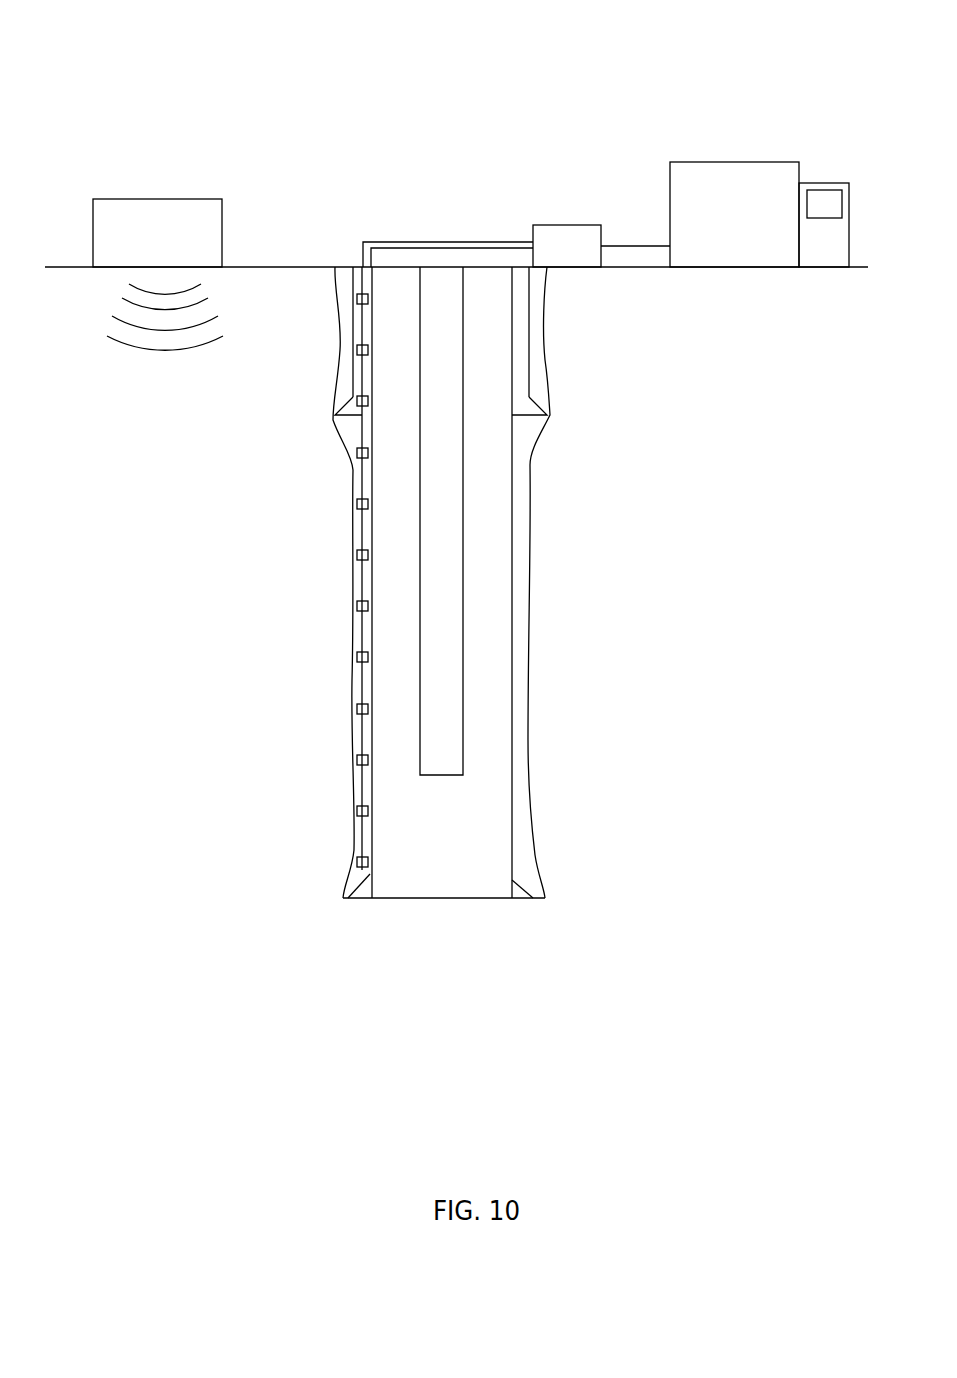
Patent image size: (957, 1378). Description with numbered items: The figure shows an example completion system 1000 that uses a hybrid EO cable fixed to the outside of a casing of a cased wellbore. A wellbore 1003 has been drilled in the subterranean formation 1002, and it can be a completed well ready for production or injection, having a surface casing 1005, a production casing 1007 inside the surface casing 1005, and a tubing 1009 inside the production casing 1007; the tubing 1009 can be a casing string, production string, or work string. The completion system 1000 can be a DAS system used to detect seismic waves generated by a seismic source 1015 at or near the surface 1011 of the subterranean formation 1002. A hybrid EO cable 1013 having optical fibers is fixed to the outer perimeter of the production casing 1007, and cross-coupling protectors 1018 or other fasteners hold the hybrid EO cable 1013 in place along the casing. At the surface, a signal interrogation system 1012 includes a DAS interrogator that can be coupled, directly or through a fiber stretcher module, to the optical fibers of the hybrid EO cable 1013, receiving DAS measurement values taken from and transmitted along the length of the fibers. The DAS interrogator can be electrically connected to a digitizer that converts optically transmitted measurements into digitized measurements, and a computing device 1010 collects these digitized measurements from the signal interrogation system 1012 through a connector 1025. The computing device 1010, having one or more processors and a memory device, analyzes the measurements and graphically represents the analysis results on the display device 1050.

The completion system 1000 is at (343, 45).
The subterranean formation 1002 is at (823, 391).
The wellbore 1003 is at (350, 500).
The surface casing 1005 is at (530, 352).
The production casing 1007 is at (512, 468).
The tubing 1009 is at (463, 530).
The computing device 1010 is at (755, 222).
The surface 1011 is at (251, 267).
The signal interrogation system 1012 is at (588, 264).
The hybrid EO cable 1013 is at (362, 428).
The seismic source 1015 is at (179, 243).
The cross-coupling protectors 1018 is at (362, 658).
The connector 1025 is at (613, 246).
The display device 1050 is at (826, 190).